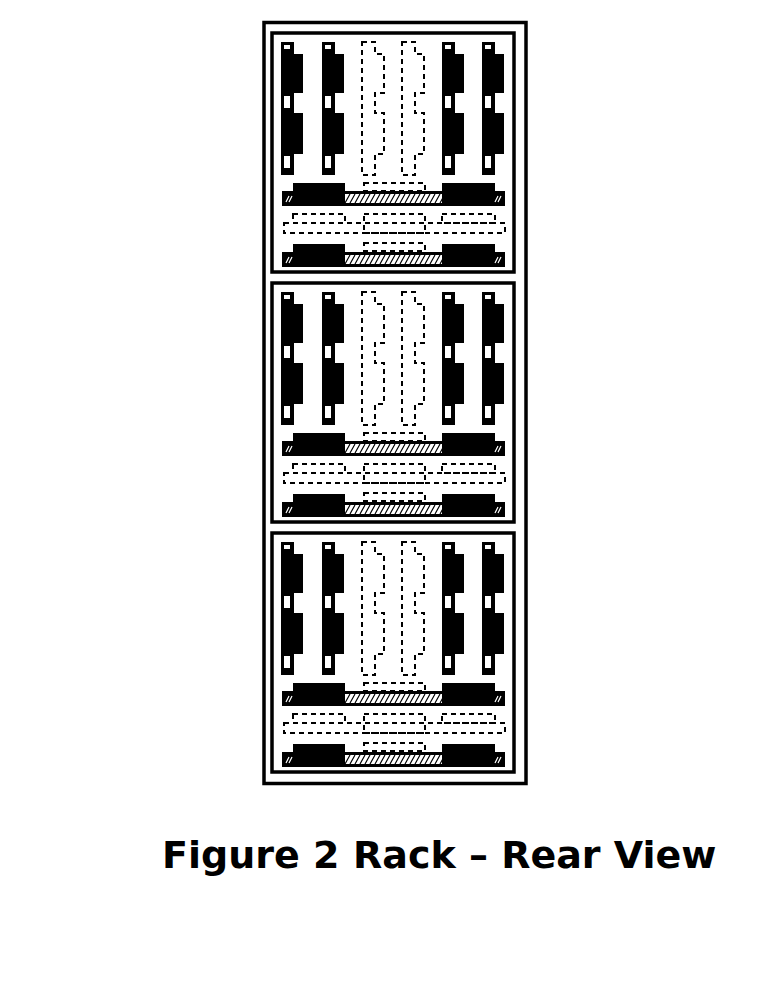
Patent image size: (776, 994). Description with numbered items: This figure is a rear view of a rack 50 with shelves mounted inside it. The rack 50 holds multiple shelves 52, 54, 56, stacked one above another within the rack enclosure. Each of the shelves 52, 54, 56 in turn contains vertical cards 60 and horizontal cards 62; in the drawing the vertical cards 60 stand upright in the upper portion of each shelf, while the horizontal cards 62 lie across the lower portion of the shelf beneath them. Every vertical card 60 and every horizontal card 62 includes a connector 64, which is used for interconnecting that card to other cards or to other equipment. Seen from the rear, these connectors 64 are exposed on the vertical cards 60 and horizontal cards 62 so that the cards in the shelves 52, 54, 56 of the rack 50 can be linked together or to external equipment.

The rack 50 is at (536, 424).
The shelf 52 is at (272, 133).
The shelf 54 is at (272, 373).
The shelf 56 is at (272, 625).
The vertical card 60 is at (505, 102).
The horizontal card 62 is at (505, 193).
The connector 64 is at (505, 128).